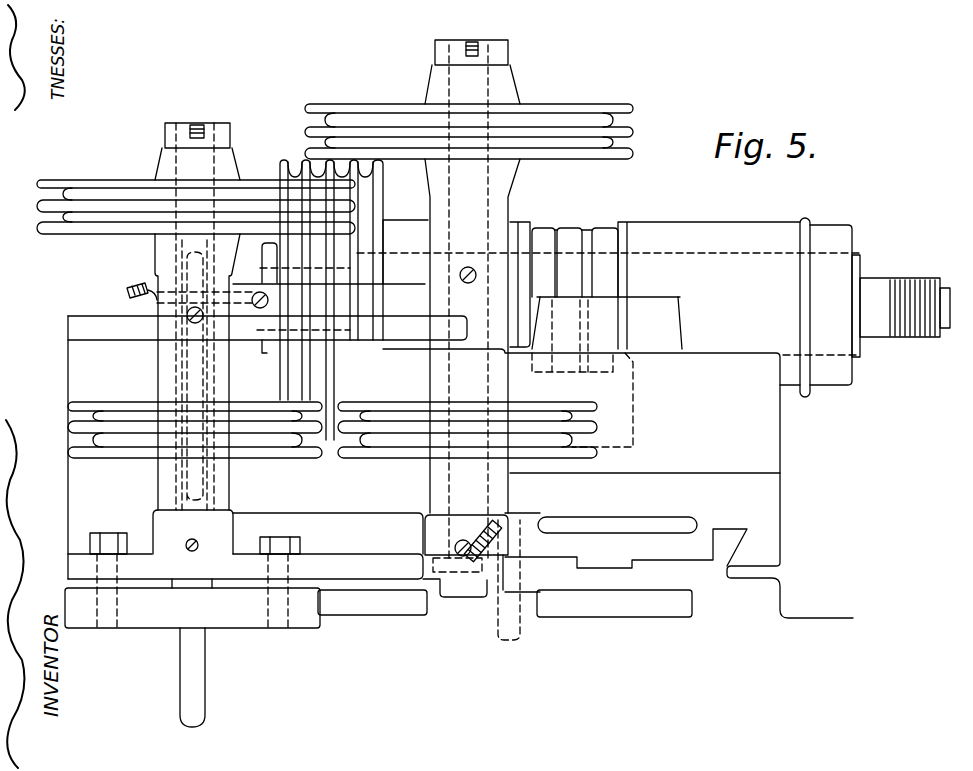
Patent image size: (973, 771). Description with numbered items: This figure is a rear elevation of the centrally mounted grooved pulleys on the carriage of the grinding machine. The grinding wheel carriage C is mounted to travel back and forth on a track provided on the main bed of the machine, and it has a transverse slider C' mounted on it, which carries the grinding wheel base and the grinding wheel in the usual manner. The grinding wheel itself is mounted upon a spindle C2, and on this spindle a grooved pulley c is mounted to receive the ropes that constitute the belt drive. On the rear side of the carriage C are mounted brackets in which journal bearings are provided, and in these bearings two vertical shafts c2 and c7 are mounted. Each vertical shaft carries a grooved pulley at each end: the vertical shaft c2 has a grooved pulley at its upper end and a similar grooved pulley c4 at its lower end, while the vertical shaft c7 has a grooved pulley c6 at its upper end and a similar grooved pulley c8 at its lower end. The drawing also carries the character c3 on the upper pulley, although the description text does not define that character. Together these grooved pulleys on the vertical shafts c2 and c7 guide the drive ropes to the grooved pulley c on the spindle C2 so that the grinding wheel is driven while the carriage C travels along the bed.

The grinding wheel carriage C is at (462, 472).
The transverse slider C' is at (623, 509).
The spindle C2 is at (873, 284).
The grooved pulley c is at (368, 200).
The vertical shaft c2 is at (492, 38).
The upper pulley c3 is at (568, 93).
The grooved pulley c4 is at (560, 400).
The grooved pulley c6 is at (125, 168).
The vertical shaft c7 is at (218, 123).
The grooved pulley c8 is at (123, 450).